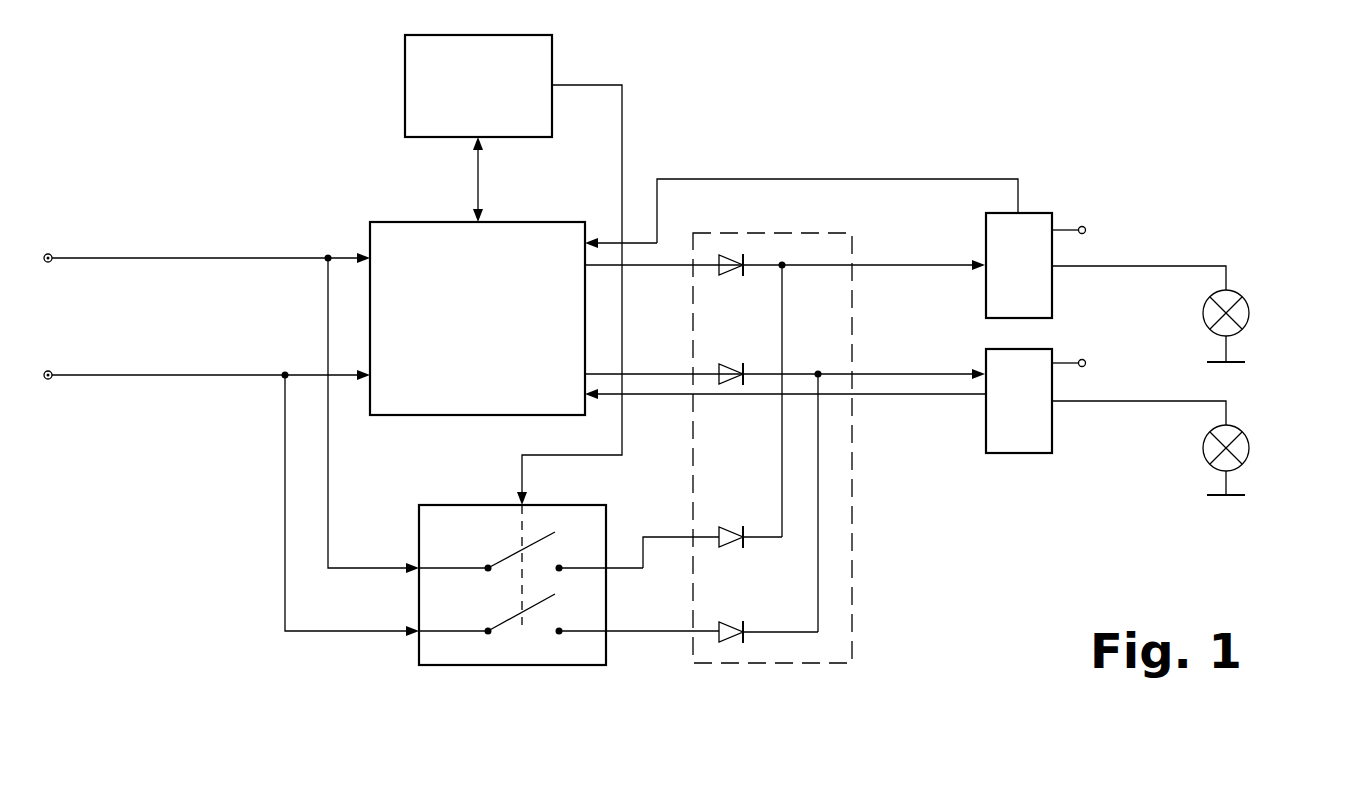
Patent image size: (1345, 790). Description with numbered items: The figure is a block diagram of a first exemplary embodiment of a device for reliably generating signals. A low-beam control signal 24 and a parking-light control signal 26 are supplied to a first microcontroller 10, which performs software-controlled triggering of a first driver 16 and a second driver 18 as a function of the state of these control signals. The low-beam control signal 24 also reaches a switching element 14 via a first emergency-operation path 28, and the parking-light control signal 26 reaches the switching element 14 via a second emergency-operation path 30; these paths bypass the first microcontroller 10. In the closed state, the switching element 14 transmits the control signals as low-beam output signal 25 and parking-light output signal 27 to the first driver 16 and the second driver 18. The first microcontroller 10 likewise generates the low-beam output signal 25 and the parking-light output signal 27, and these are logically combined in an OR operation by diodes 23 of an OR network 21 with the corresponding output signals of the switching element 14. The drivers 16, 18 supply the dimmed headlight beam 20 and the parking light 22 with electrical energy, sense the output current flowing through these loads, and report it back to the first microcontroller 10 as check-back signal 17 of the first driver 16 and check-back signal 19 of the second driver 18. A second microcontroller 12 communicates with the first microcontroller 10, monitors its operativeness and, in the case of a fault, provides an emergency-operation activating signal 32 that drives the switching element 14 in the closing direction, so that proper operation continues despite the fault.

The first microcontroller 10 is at (395, 238).
The second microcontroller 12 is at (425, 61).
The switching element 14 is at (500, 652).
The first driver 16 is at (1028, 229).
The check-back signal of first driver 17 is at (914, 178).
The second driver 18 is at (1018, 435).
The check-back signal of second driver 19 is at (914, 398).
The dimmed headlight beam 20 is at (1240, 313).
The OR network 21 is at (817, 650).
The parking light 22 is at (1243, 452).
The diodes 23 is at (730, 275).
The low-beam control signal 24 is at (48, 254).
The low-beam output signal 25 is at (913, 263).
The parking-light control signal 26 is at (48, 379).
The parking-light output signal 27 is at (913, 372).
The first emergency-operation path 28 is at (330, 487).
The second emergency-operation path 30 is at (283, 520).
The emergency-operation activating signal 32 is at (622, 103).